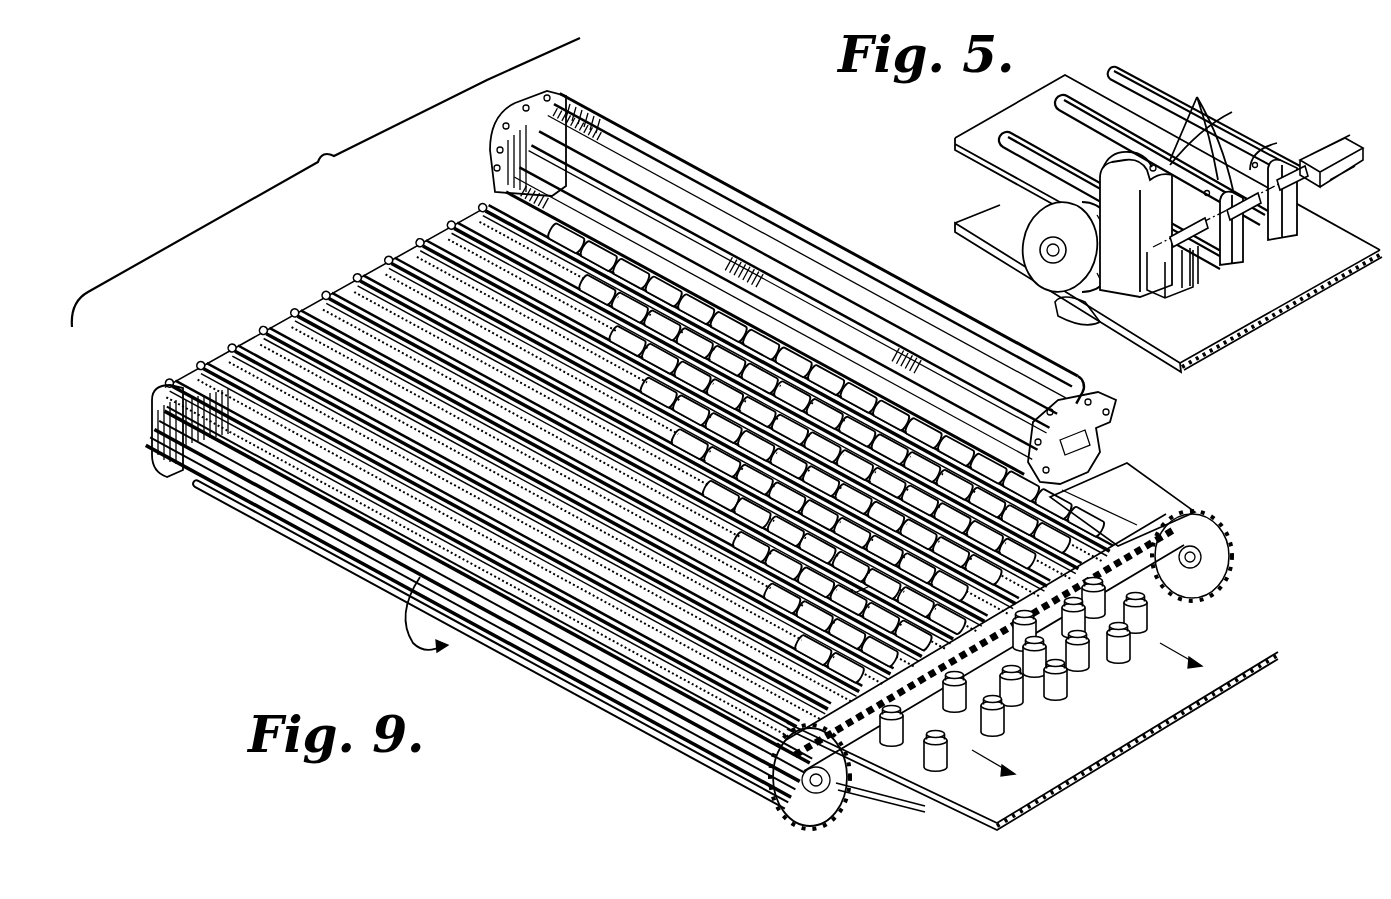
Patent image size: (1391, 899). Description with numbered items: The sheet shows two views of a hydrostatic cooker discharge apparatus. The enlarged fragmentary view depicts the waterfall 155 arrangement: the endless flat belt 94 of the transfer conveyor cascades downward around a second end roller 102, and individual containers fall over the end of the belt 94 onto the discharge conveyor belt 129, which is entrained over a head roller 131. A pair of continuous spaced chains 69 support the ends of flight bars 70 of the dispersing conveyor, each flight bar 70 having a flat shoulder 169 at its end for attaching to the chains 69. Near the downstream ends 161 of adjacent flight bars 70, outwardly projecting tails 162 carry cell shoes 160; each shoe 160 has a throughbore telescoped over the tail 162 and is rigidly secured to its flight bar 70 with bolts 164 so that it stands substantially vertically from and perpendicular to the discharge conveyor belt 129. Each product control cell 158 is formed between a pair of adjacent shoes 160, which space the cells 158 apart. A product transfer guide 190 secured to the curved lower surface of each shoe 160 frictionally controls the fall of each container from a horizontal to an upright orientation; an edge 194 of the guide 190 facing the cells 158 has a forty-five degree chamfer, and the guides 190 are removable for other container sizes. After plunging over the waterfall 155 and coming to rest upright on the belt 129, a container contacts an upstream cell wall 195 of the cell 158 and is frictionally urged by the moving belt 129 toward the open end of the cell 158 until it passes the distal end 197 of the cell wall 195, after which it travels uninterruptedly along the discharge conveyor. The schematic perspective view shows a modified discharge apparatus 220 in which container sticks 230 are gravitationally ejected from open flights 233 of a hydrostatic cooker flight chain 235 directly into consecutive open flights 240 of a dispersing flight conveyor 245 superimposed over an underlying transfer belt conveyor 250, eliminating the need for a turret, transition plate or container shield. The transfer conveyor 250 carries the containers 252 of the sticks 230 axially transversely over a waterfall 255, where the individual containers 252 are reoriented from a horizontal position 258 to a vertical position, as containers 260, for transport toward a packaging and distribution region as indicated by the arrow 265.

In FIG. 9, the modified hydrostatic cooker discharge apparatus 220 is at (562, 708).
In FIG. 9, the container sticks 230 is at (662, 285).
In FIG. 9, the open flights 233 is at (530, 186).
In FIG. 9, the hydrostatic cooker flight chain 235 is at (1112, 408).
In FIG. 9, the open flights 240 is at (470, 215).
In FIG. 9, the dispersing flight conveyor 245 is at (388, 281).
In FIG. 9, the transfer belt conveyor 250 is at (261, 345).
In FIG. 9, the containers 252 is at (1133, 530).
In FIG. 9, the waterfall 255 is at (1103, 500).
In FIG. 9, the horizontal position 258 is at (826, 733).
In FIG. 9, the containers 260 is at (1068, 690).
In FIG. 9, the arrow 265 is at (1264, 638).
In FIG. 5, the continuous spaced chains 69 is at (1343, 178).
In FIG. 5, the flight bars 70 is at (1063, 109).
In FIG. 5, the endless flat belt 94 is at (987, 164).
In FIG. 5, the second end roller 102 is at (1050, 270).
In FIG. 5, the discharge conveyor belt 129 is at (1168, 366).
In FIG. 5, the head roller 131 is at (1090, 328).
In FIG. 5, the waterfall 155 is at (1233, 86).
In FIG. 5, the product control cell 158 is at (1253, 249).
In FIG. 5, the cell shoes 160 is at (1210, 178).
In FIG. 5, the downstream ends 161 is at (1156, 172).
In FIG. 5, the outwardly projecting tails 162 is at (1268, 211).
In FIG. 5, the bolts 164 is at (1136, 228).
In FIG. 5, the flat shoulder 169 is at (1194, 258).
In FIG. 5, the product transfer guide 190 is at (1110, 219).
In FIG. 5, the edge 194 is at (1172, 160).
In FIG. 5, the upstream cell wall 195 is at (1247, 166).
In FIG. 5, the distal end 197 is at (1183, 288).